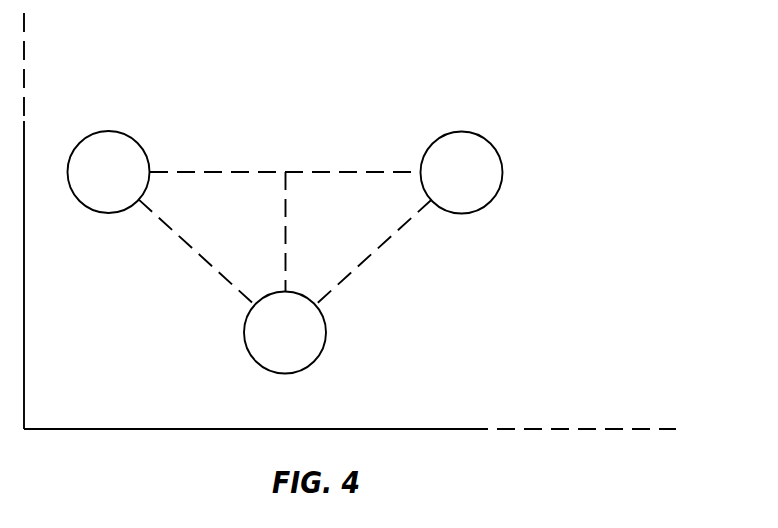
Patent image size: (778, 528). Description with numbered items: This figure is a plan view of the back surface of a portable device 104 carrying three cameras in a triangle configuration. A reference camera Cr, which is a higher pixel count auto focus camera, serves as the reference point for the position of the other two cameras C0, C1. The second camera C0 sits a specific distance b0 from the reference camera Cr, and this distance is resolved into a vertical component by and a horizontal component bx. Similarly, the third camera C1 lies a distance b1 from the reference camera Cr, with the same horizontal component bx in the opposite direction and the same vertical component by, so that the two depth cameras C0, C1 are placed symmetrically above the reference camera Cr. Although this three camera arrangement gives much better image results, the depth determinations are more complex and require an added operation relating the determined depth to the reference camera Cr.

The portable device 104 is at (532, 355).
The second camera C0 is at (109, 172).
The third camera C1 is at (462, 173).
The reference camera Cr is at (285, 333).
The horizontal component bx is at (285, 147).
The vertical component by is at (306, 231).
The distance b0 is at (197, 252).
The distance b1 is at (373, 252).